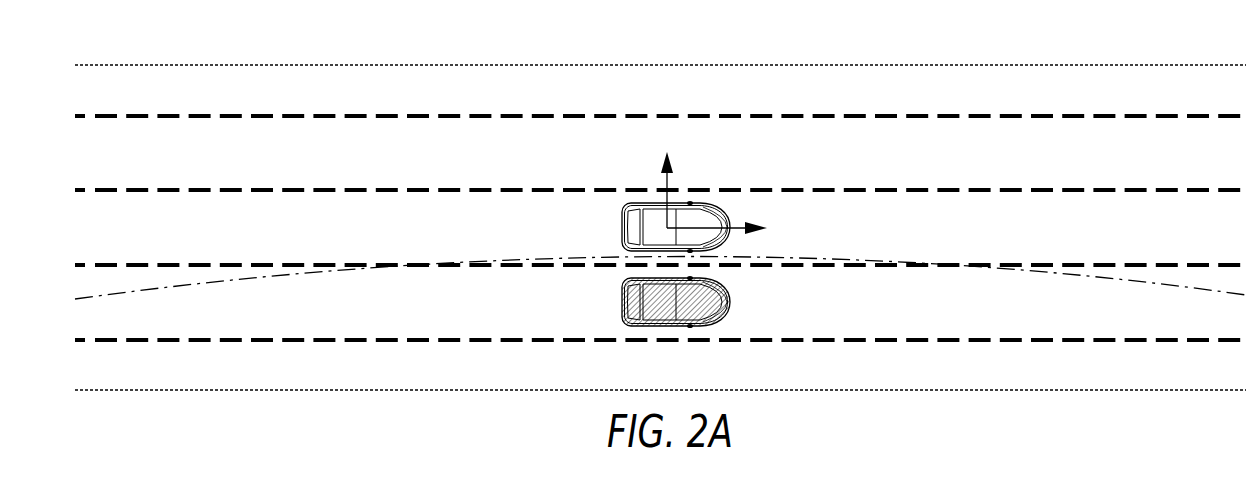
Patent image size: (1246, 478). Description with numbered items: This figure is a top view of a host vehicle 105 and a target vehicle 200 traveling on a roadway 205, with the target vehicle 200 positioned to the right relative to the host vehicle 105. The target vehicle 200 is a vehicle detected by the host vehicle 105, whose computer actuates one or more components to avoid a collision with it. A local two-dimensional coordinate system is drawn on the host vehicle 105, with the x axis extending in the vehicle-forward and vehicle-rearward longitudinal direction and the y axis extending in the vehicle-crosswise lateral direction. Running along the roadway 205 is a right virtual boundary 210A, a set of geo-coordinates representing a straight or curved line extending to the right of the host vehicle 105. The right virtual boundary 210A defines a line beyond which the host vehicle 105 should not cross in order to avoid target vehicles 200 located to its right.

The host vehicle 105 is at (621, 216).
The target vehicle 200 is at (621, 293).
The roadway 205 is at (1143, 146).
The right virtual boundary 210A is at (1116, 281).